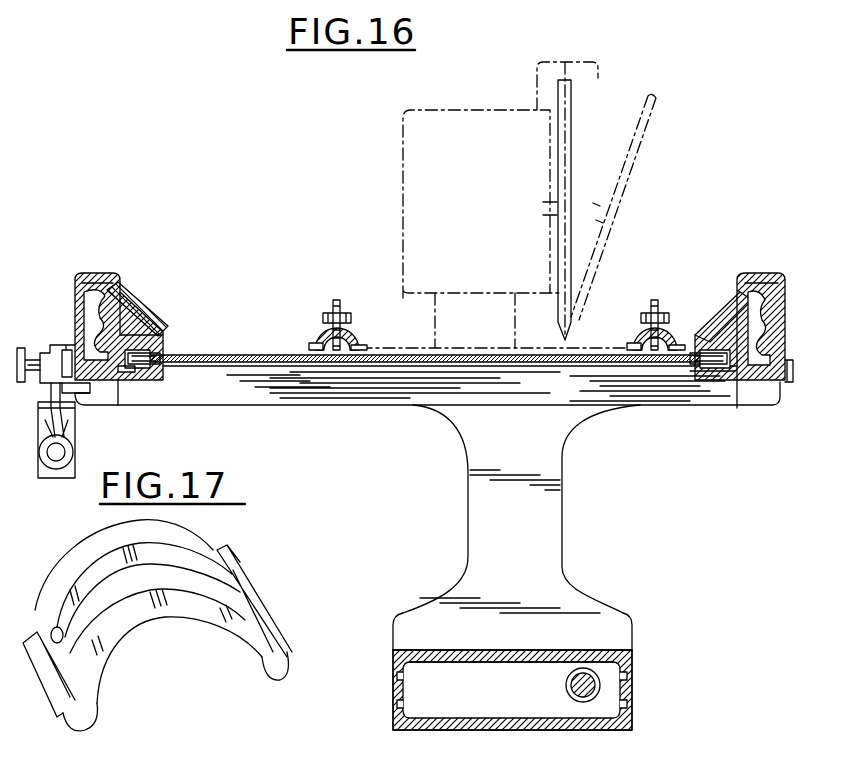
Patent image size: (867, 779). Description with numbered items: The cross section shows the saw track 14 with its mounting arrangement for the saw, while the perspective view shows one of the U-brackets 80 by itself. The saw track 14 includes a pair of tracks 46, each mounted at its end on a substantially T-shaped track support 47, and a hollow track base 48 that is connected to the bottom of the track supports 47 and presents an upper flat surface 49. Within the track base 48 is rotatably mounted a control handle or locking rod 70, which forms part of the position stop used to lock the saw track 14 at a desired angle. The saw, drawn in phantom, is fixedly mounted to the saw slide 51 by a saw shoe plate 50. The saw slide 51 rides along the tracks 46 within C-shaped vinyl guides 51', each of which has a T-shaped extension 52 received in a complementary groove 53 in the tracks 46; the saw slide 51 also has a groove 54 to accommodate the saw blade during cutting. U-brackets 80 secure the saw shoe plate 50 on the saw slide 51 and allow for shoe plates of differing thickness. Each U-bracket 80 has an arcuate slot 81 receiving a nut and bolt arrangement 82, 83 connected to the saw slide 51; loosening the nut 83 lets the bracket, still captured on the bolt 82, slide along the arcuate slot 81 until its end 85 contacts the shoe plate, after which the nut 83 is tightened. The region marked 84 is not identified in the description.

In FIG. 16, the saw track 14 is at (257, 305).
In FIG. 16, the tracks 46 is at (75, 310).
In FIG. 16, the track support 47 is at (567, 527).
In FIG. 16, the track base 48 is at (632, 690).
In FIG. 16, the upper flat surface 49 is at (600, 650).
In FIG. 16, the saw shoe plate 50 is at (586, 300).
In FIG. 16, the saw slide 51 is at (430, 342).
In FIG. 16, the C-shaped vinyl guides 51' is at (427, 334).
In FIG. 16, the T-shaped extension 52 is at (132, 380).
In FIG. 16, the groove 53 is at (120, 324).
In FIG. 16, the groove 54 is at (556, 363).
In FIG. 16, the locking rod 70 is at (565, 690).
In FIG. 16, the U-bracket 80 is at (317, 349).
In FIG. 17, the U-bracket 80 is at (277, 643).
In FIG. 17, the arcuate slot 81 is at (187, 557).
In FIG. 16, the bolt 82 is at (347, 321).
In FIG. 16, the nut 83 is at (335, 302).
In FIG. 16, the clamp left foot 84 is at (308, 353).
In FIG. 16, the end 85 is at (357, 347).